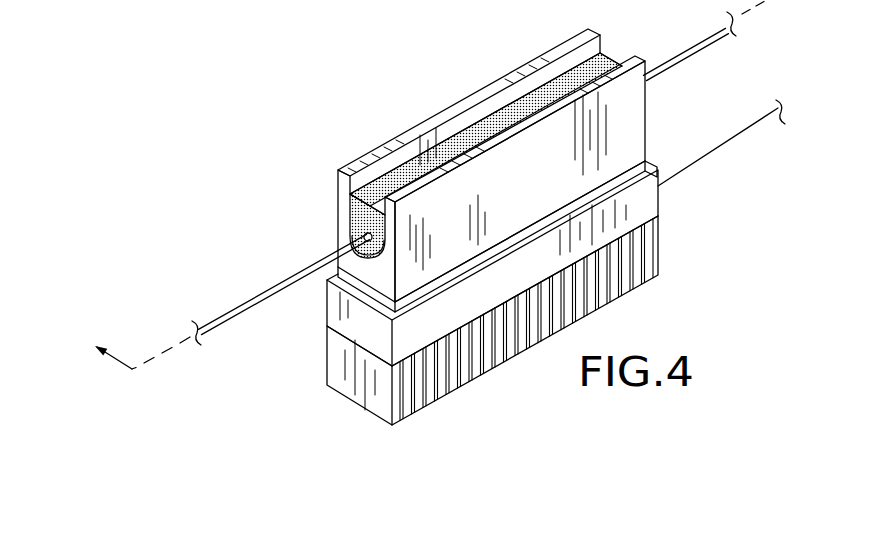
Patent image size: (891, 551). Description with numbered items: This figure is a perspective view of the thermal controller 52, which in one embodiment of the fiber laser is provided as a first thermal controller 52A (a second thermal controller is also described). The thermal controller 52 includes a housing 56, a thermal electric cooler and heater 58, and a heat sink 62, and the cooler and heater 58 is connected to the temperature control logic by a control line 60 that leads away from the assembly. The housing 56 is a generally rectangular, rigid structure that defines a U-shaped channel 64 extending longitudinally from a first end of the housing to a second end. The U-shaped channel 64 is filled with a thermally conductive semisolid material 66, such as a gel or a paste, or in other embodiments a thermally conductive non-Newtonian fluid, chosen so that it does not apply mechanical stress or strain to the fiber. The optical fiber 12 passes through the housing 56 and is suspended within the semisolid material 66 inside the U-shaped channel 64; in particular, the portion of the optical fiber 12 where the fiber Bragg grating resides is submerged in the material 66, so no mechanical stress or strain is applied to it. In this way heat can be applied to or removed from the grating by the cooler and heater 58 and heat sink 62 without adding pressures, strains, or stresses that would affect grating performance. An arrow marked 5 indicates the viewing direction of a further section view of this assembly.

The section line / viewing direction of FIG. 5 is at (131, 348).
The optical fiber 12 is at (282, 274).
The thermal controller 52 is at (488, 214).
The first thermal controller 52A is at (440, 95).
The housing 56 is at (401, 126).
The thermal electric cooler and heater 58 is at (330, 306).
The control line 60 is at (700, 165).
The heat sink 62 is at (348, 386).
The U-shaped channel 64 is at (513, 99).
The thermally conductive semisolid material 66 is at (360, 217).